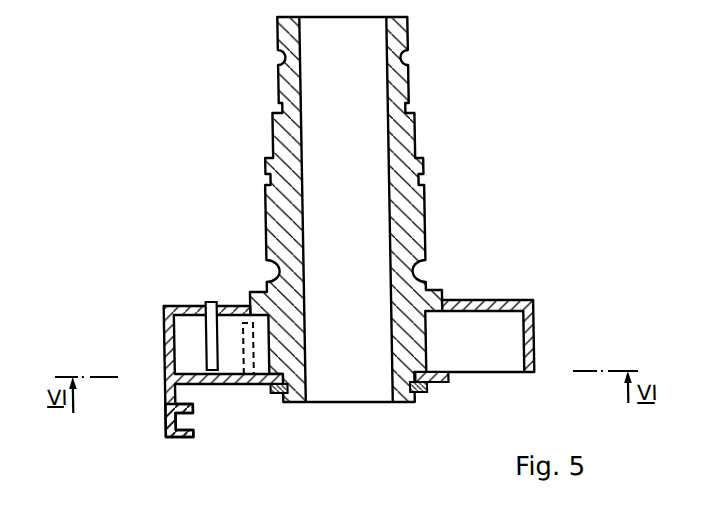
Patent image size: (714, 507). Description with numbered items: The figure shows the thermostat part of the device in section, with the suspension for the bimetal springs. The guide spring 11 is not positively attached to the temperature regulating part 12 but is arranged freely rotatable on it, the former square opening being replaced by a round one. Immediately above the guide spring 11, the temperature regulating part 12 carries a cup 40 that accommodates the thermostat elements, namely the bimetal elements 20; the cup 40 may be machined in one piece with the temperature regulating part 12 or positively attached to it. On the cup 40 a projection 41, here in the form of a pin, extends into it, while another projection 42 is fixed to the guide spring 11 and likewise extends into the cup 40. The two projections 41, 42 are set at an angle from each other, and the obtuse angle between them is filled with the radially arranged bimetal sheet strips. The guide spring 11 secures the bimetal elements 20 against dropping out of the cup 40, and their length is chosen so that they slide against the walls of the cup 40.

The guide spring 11 is at (157, 407).
The temperature regulating part 12 is at (413, 217).
The bimetal elements 20 is at (181, 343).
The cup 40 is at (513, 307).
The projection 41 is at (207, 312).
The projection 42 is at (240, 328).